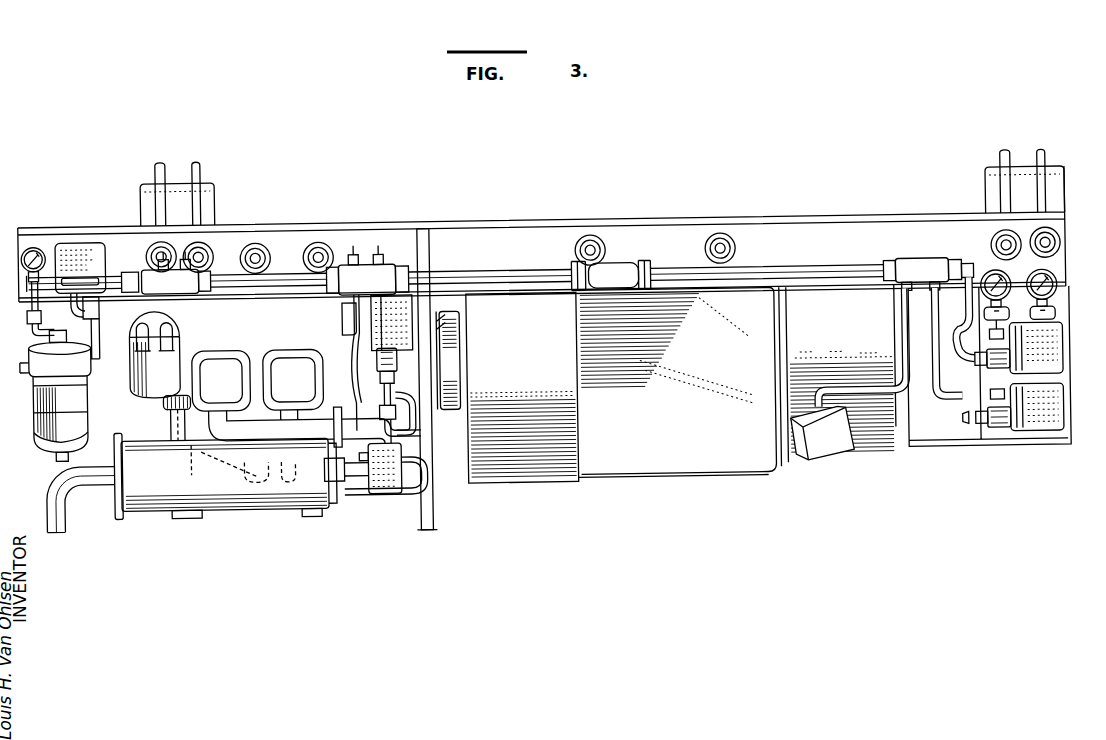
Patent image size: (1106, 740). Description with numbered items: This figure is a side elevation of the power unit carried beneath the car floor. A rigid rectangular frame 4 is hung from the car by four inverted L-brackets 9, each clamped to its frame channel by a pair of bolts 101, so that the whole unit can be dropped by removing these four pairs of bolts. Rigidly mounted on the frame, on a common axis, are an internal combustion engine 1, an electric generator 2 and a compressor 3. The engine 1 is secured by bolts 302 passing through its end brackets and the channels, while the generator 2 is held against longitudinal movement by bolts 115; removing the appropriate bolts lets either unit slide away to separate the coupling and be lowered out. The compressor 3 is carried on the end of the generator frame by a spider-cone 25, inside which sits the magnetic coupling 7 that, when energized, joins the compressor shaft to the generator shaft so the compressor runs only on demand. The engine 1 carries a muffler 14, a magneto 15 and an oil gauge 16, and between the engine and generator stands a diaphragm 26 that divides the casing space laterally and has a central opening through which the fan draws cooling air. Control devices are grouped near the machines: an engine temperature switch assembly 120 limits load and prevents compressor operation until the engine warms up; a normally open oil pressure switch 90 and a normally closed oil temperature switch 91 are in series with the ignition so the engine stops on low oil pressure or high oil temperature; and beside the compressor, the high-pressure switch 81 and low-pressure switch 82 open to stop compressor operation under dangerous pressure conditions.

The internal combustion engine 1 is at (224, 441).
The electric generator 2 is at (547, 493).
The compressor 3 is at (1003, 383).
The frame 4 is at (634, 210).
The magnetic coupling 7 is at (832, 473).
The inverted L-brackets 9 is at (213, 185).
The muffler 14 is at (136, 501).
The magneto 15 is at (185, 345).
The oil gauge 16 is at (35, 240).
The spider-cone 25 is at (868, 436).
The diaphragm 26 is at (431, 513).
The high-pressure switch 81 is at (1048, 356).
The low-pressure switch 82 is at (1048, 408).
The oil pressure switch 90 is at (88, 236).
The oil temperature switch 91 is at (383, 476).
The bolts 101 is at (213, 248).
The bolts 115 is at (608, 252).
The engine temperature switch assembly 120 is at (395, 316).
The bolts 302 is at (316, 237).